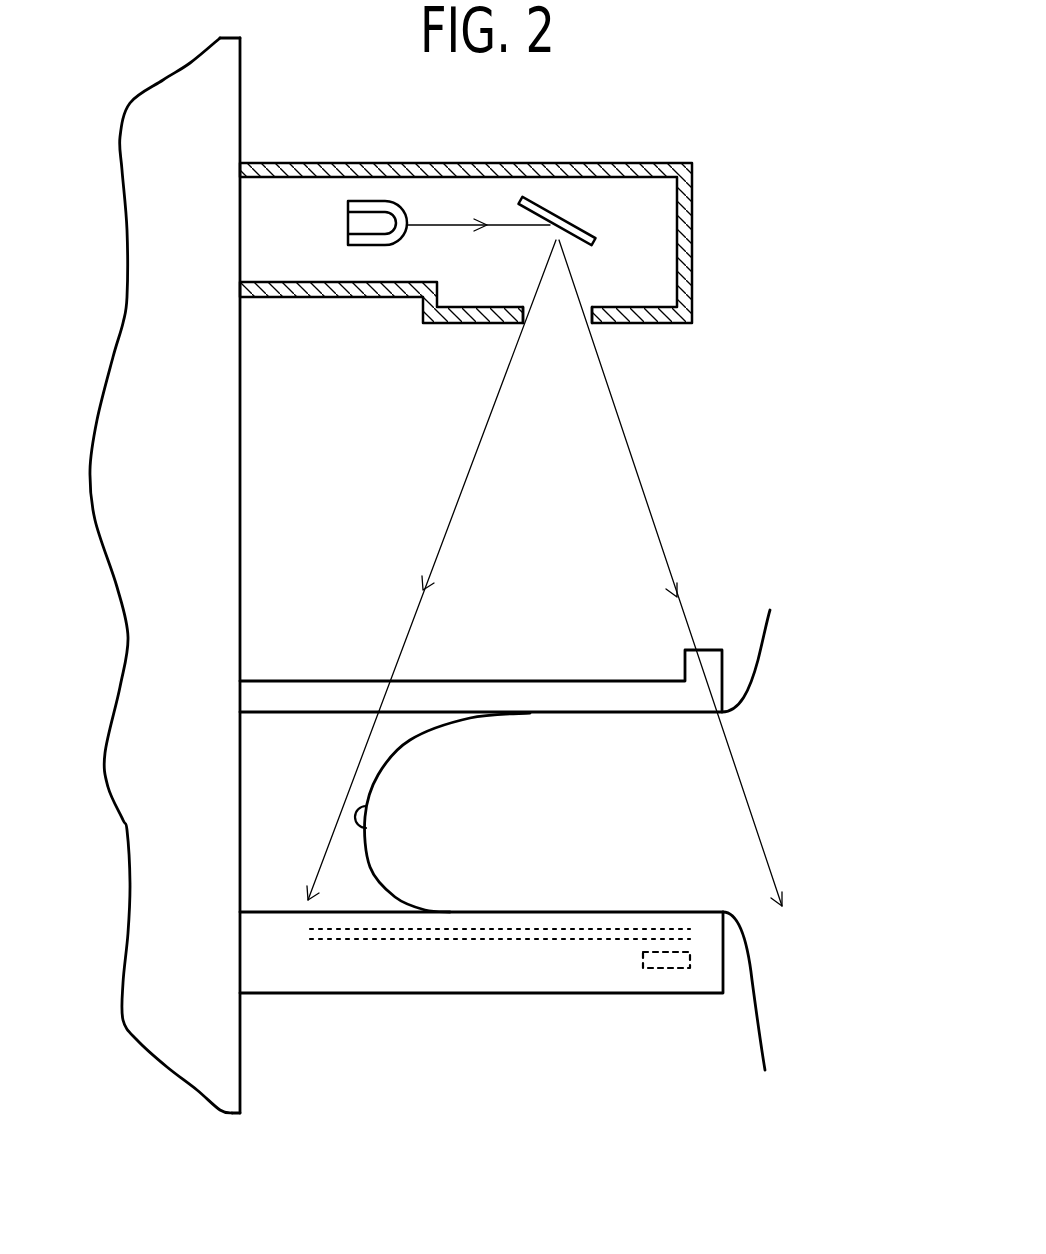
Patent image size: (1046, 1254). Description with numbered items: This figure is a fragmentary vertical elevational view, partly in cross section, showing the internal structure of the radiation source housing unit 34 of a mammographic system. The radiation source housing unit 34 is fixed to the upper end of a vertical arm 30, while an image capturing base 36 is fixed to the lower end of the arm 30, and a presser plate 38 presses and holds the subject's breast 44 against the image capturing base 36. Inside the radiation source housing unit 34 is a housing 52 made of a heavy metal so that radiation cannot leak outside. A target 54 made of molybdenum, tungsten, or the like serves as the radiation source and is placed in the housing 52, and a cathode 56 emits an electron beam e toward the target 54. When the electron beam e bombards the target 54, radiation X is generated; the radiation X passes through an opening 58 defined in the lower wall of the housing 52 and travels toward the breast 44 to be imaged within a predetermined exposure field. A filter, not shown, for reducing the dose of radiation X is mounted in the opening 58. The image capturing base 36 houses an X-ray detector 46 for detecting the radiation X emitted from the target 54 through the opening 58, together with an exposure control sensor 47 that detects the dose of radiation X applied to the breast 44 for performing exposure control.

The vertical arm 30 is at (167, 358).
The radiation source housing unit 34 is at (472, 209).
The image capturing base 36 is at (318, 1008).
The presser plate 38 is at (305, 697).
The breast 44 is at (534, 850).
The X-ray detector 46 is at (424, 942).
The exposure control sensor 47 is at (655, 968).
The housing 52 is at (310, 170).
The target 54 is at (549, 203).
The cathode 56 is at (366, 204).
The opening 58 is at (553, 310).
The electron beam e is at (438, 223).
The radiation X is at (638, 472).